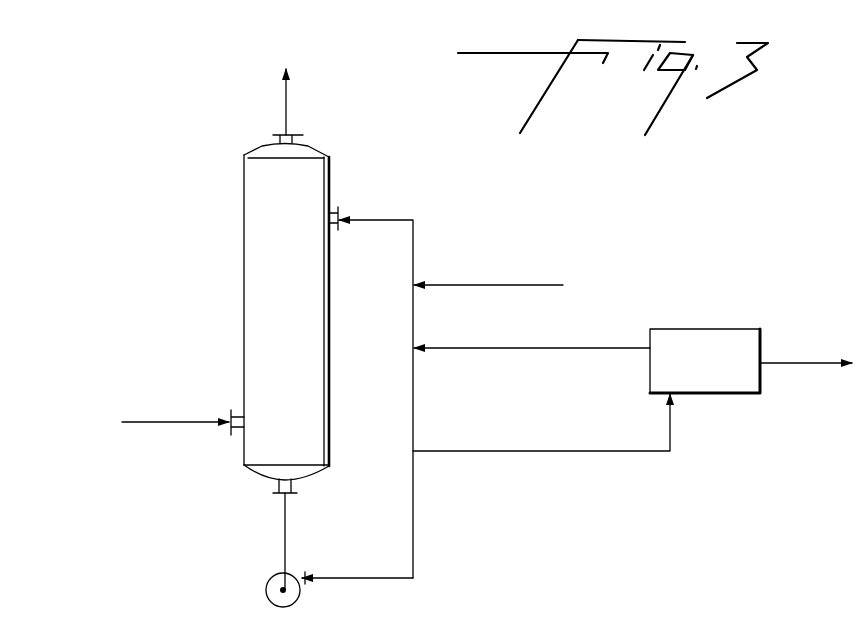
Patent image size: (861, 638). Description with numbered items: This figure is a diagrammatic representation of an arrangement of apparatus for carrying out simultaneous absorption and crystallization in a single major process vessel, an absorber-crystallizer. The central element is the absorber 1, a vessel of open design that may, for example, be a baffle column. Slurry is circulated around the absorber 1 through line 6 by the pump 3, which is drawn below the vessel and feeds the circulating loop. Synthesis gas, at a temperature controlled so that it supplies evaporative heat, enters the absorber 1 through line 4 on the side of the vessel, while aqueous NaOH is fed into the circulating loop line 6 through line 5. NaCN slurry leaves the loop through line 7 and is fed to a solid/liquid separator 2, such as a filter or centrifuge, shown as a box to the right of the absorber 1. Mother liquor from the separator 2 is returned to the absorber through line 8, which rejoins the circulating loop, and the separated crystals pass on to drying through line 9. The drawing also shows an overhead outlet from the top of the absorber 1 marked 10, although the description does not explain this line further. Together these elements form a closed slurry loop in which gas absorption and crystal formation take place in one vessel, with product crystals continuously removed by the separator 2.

The absorber 1 is at (290, 320).
The solid/liquid separator 2 is at (712, 369).
The pump 3 is at (267, 592).
The line 4 is at (163, 420).
The line 5 is at (502, 283).
The line 6 is at (410, 537).
The line 7 is at (543, 450).
The line 8 is at (548, 328).
The line 9 is at (817, 363).
The overhead outlet line 10 is at (288, 113).